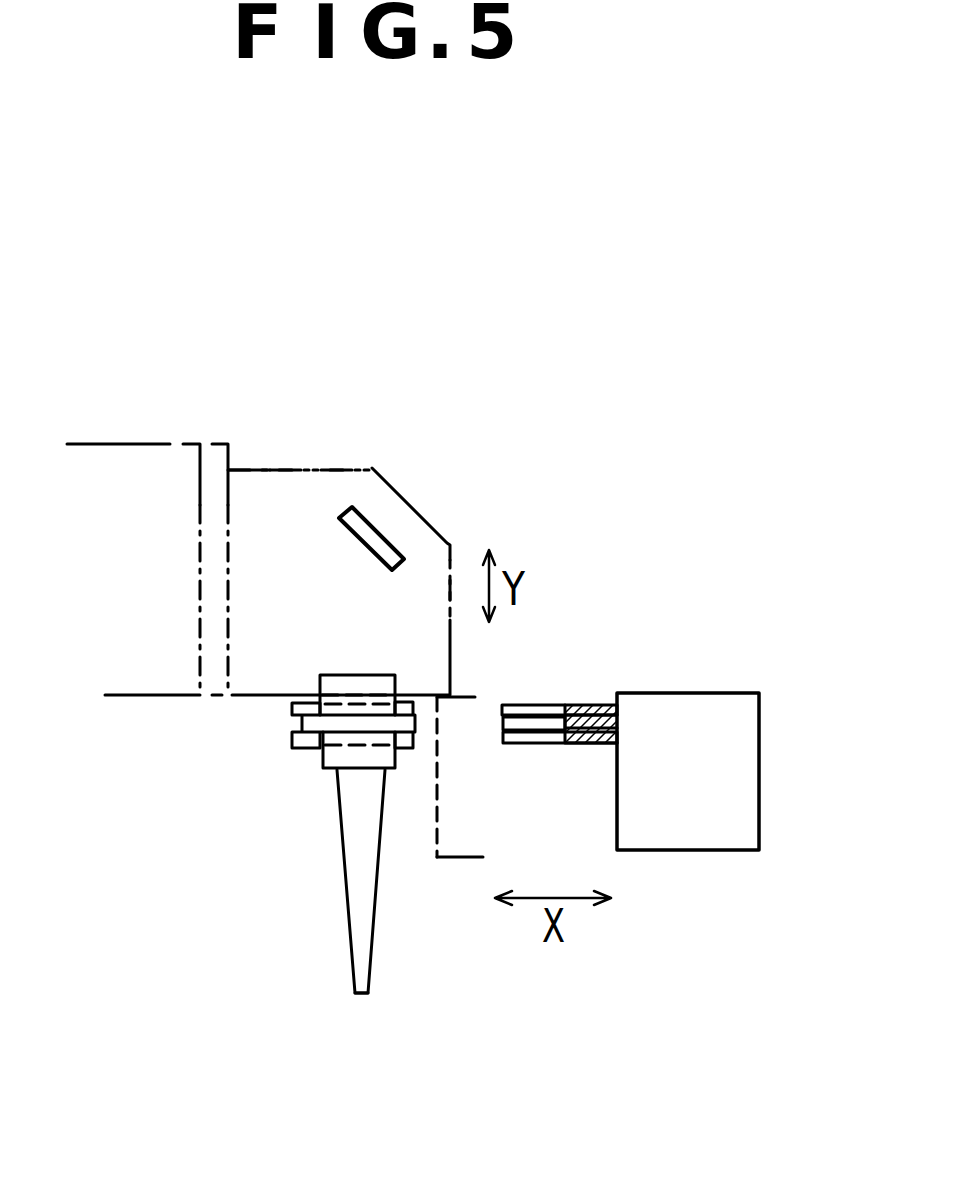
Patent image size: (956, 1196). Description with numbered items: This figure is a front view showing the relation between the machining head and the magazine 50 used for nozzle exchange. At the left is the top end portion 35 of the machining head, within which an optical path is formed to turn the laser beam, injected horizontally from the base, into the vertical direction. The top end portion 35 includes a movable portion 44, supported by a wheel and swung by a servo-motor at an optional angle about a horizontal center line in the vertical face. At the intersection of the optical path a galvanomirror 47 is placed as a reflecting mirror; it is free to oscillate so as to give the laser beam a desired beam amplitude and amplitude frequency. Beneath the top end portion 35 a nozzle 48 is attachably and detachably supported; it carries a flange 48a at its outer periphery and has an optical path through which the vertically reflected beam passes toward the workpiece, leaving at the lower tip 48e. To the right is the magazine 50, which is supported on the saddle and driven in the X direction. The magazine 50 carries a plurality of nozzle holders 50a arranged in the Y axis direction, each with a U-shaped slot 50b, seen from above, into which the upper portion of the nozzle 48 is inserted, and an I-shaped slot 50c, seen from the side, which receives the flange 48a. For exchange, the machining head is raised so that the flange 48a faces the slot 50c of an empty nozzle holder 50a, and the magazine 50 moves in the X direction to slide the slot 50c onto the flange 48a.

The top end portion 35 is at (356, 462).
The movable portion 44 is at (273, 490).
The galvanomirror 47 is at (380, 528).
The nozzle 48 is at (340, 826).
The flange 48a is at (302, 727).
The chuck tip 48e is at (362, 998).
The magazine 50 is at (760, 787).
The nozzle holder 50a is at (594, 705).
The slot 50b is at (546, 745).
The slot 50c is at (505, 722).